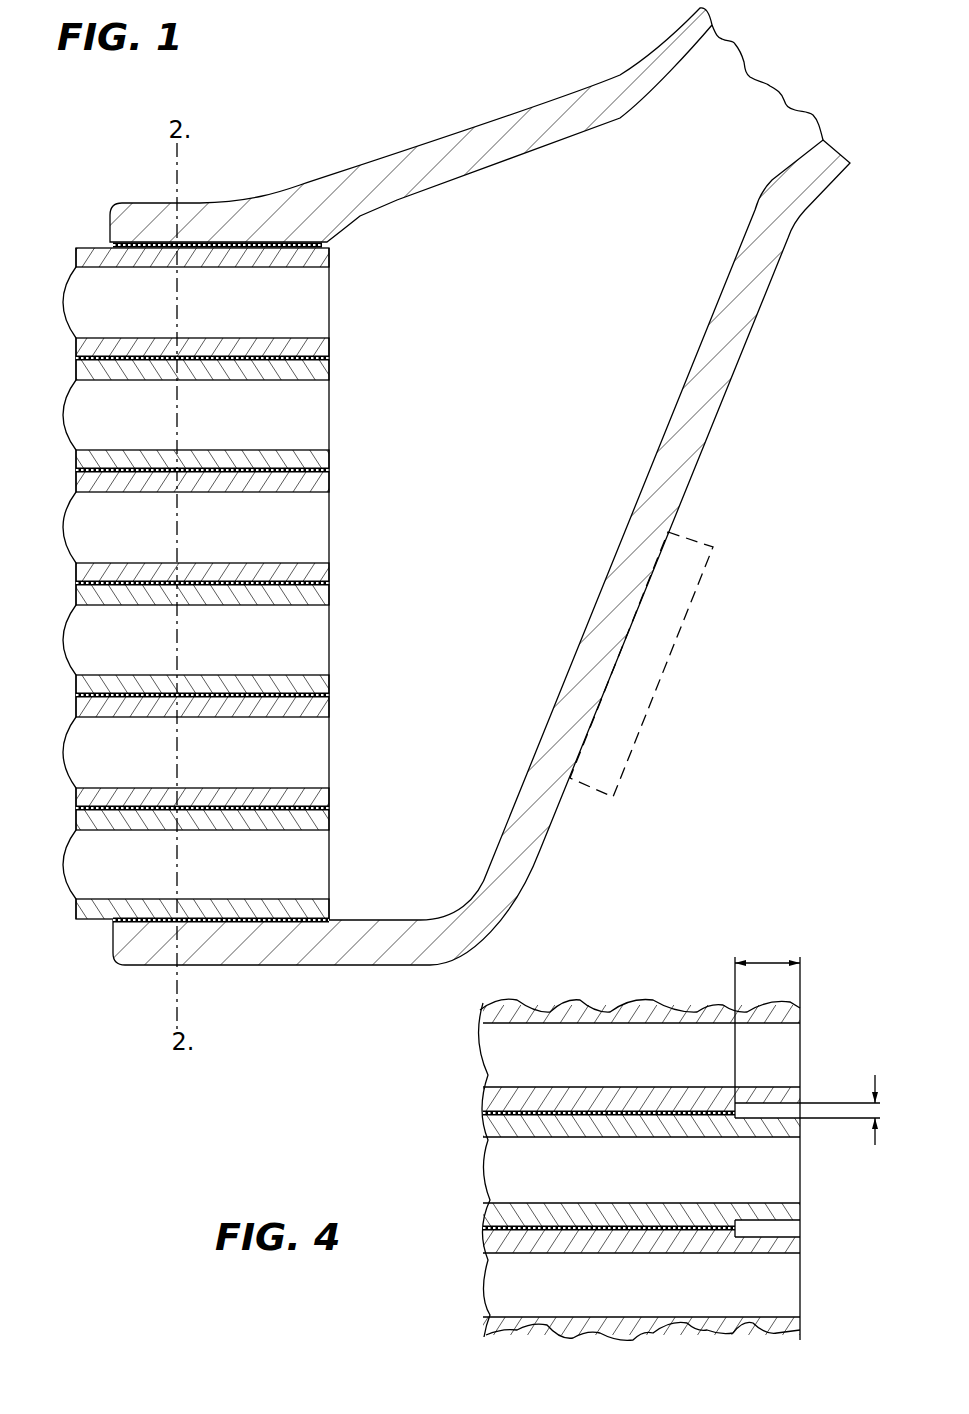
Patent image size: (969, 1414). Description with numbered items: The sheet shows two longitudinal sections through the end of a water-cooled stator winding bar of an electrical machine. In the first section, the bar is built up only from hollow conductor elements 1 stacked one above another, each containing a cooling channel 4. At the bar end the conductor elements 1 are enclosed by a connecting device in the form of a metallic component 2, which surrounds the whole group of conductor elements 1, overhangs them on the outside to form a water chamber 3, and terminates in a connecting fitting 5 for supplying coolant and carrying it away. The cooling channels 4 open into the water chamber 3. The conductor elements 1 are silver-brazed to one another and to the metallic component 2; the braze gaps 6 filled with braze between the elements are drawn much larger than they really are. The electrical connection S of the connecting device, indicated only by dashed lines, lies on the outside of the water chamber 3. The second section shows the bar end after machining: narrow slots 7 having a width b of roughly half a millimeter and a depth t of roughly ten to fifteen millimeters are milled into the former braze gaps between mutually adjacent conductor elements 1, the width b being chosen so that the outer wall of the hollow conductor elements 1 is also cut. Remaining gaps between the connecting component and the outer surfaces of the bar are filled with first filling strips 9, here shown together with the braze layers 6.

In FIG. 1, the hollow conductor element 1 is at (275, 256).
In FIG. 4, the hollow conductor element 1 is at (540, 1202).
In FIG. 1, the metallic component 2 is at (448, 162).
In FIG. 1, the water chamber 3 is at (545, 361).
In FIG. 1, the cooling channel 4 is at (230, 316).
In FIG. 4, the cooling channel 4 is at (568, 1067).
In FIG. 1, the connecting fitting 5 is at (682, 40).
In FIG. 1, the braze gap 6 is at (329, 358).
In FIG. 4, the slot 7 is at (767, 1112).
In FIG. 1, the first filling strip 9 is at (266, 245).
In FIG. 1, the electrical connection S is at (632, 690).
In FIG. 4, the slot depth t is at (767, 1019).
In FIG. 4, the slot width b is at (807, 1110).